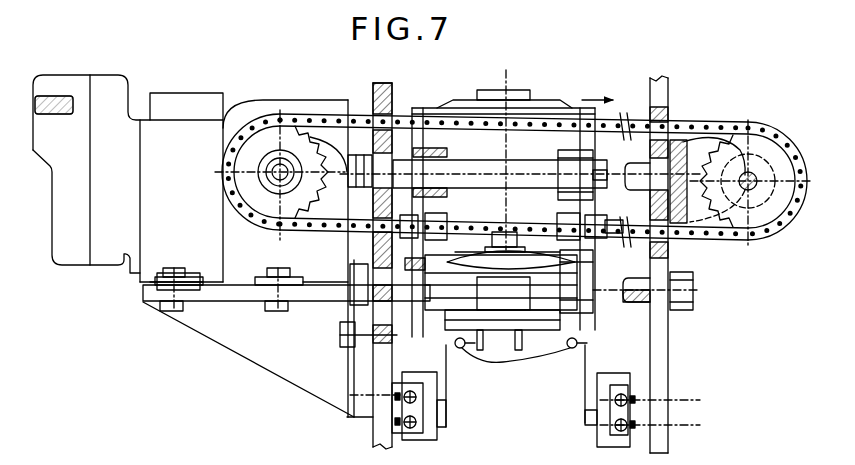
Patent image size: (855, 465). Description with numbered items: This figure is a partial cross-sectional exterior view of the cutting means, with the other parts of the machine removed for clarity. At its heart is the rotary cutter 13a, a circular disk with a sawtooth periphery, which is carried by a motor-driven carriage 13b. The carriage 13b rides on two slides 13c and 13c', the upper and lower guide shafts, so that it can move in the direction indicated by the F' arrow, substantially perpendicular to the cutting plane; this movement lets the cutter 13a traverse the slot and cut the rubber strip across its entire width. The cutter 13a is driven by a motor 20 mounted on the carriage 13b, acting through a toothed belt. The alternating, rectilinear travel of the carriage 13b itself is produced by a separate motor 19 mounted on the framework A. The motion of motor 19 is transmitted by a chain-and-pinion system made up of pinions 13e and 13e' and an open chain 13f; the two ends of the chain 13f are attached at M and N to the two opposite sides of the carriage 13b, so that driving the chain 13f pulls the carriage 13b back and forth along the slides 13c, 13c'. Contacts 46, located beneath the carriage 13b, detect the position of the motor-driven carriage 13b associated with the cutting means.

The motor 19 is at (124, 250).
The pinion 13e is at (280, 156).
The open chain 13f is at (627, 125).
The pinion 13e' is at (746, 162).
The motor 20 is at (533, 105).
The slide 13c is at (520, 183).
The rotary cutter 13a is at (578, 255).
The motor-driven carriage 13b is at (575, 305).
The contacts 46 is at (470, 352).
The slide 13c' is at (291, 311).
The chain attachment point M is at (378, 188).
The chain attachment point N is at (604, 219).
The framework A is at (287, 382).
The direction arrow F' is at (597, 88).